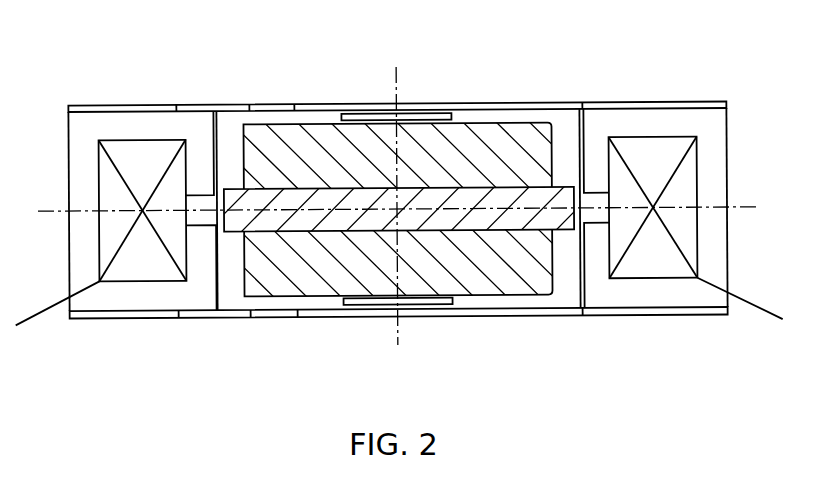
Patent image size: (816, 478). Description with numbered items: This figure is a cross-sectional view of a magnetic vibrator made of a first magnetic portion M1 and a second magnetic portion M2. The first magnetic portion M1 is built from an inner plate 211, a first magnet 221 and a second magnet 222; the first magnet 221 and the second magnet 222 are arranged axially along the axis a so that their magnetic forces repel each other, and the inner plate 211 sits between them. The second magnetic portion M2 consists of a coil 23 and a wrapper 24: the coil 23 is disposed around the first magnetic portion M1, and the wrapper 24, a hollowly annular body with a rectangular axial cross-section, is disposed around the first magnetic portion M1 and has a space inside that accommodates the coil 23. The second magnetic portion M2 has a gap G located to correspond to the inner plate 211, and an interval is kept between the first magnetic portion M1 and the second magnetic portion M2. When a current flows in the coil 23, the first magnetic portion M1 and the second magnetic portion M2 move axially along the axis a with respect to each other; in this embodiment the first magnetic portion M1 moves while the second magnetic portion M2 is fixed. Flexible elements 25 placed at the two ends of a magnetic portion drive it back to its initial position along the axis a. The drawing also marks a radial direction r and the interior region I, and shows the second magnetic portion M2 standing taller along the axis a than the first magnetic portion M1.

The gap G is at (202, 207).
The inner plate 211 is at (323, 197).
The axis a is at (398, 194).
The first magnetic portion M1 is at (432, 100).
The first magnet 221 is at (502, 137).
The inner space I is at (563, 131).
The coil 23 is at (653, 144).
The radial axis r is at (405, 206).
The second magnet 222 is at (313, 274).
The flexible elements 25 is at (420, 306).
The wrapper 24 is at (660, 291).
The second magnetic portion M2 is at (612, 315).